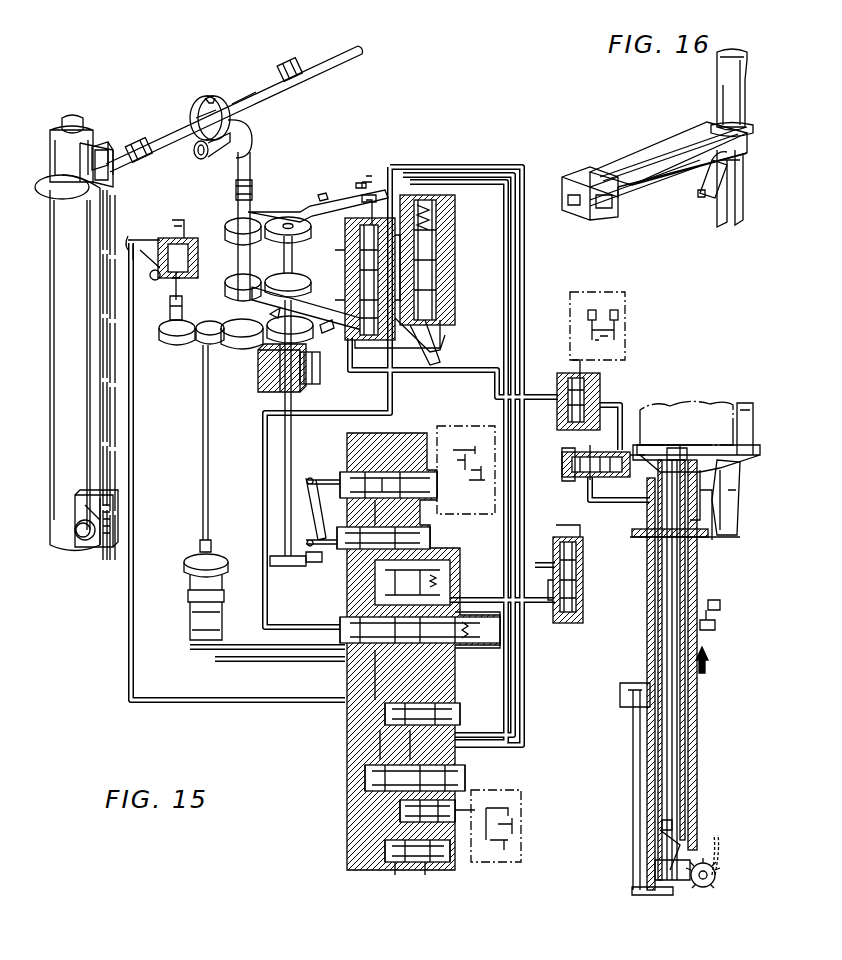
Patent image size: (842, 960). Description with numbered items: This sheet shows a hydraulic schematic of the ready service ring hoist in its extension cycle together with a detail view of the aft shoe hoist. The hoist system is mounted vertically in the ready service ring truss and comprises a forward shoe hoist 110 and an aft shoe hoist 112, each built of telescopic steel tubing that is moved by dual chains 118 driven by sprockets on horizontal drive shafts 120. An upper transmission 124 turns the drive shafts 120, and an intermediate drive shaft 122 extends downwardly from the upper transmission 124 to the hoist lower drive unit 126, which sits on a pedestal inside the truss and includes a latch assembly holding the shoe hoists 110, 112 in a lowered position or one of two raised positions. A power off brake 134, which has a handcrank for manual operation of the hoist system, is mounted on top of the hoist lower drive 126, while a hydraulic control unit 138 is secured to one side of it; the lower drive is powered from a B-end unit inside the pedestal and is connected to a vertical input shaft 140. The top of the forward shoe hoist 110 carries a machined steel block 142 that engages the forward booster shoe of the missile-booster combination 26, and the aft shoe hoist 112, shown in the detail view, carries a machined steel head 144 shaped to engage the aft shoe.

In FIG. 15, the missile-booster combination 26 is at (698, 436).
In FIG. 15, the forward shoe hoist 110 is at (48, 537).
In FIG. 15, the aft shoe hoist 112 is at (640, 442).
In FIG. 16, the aft shoe hoist 112 is at (652, 133).
In FIG. 15, the dual chains 118 is at (104, 546).
In FIG. 15, the horizontal drive shafts 120 is at (156, 138).
In FIG. 15, the intermediate drive shaft 122 is at (250, 176).
In FIG. 15, the upper transmission 124 is at (214, 87).
In FIG. 15, the hoist lower drive unit 126 is at (297, 198).
In FIG. 15, the power off brake 134 is at (173, 235).
In FIG. 15, the hydraulic control unit 138 is at (356, 864).
In FIG. 15, the vertical input shaft 140 is at (203, 452).
In FIG. 15, the steel block 142 is at (68, 120).
In FIG. 16, the machined steel head 144 is at (578, 207).